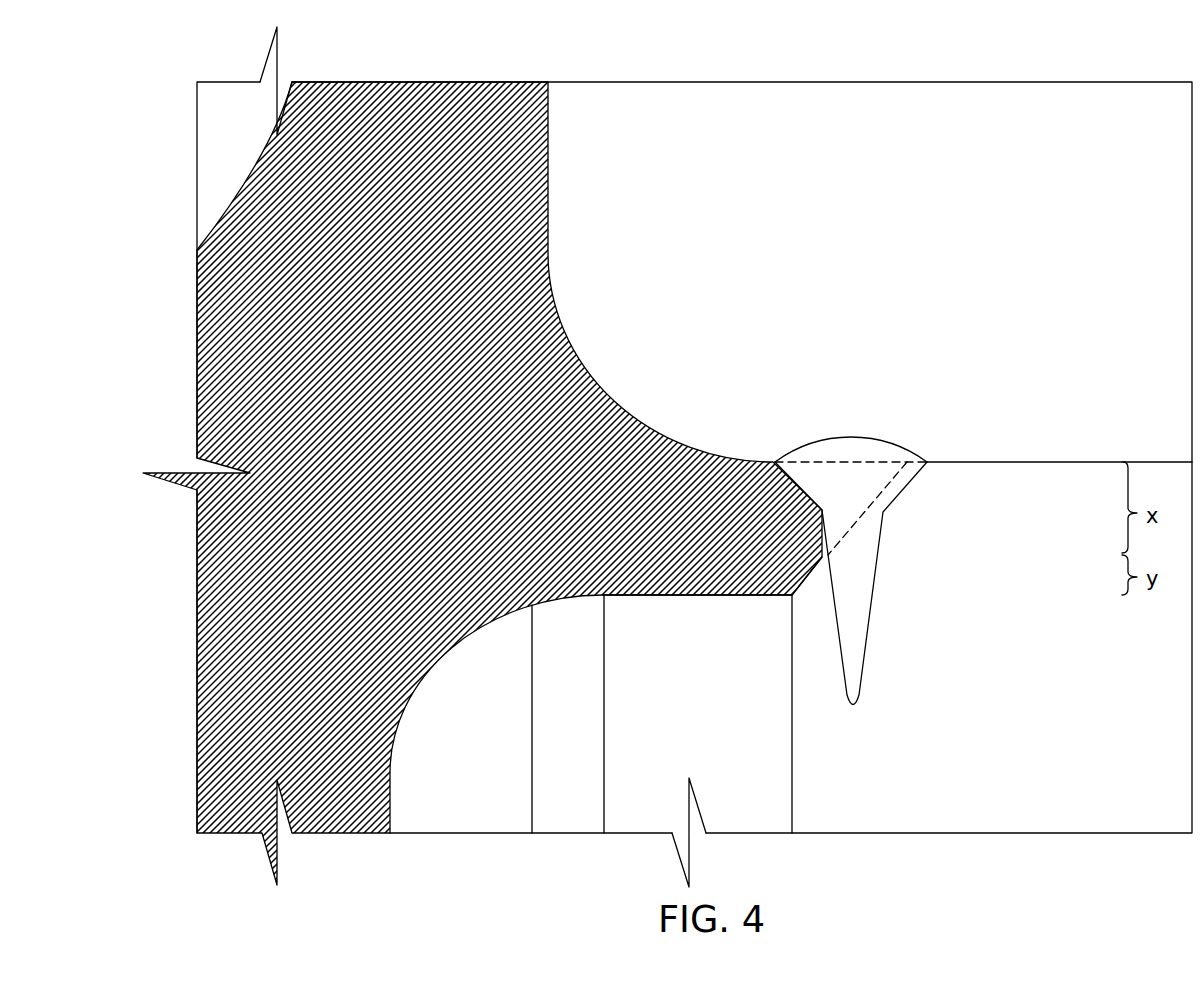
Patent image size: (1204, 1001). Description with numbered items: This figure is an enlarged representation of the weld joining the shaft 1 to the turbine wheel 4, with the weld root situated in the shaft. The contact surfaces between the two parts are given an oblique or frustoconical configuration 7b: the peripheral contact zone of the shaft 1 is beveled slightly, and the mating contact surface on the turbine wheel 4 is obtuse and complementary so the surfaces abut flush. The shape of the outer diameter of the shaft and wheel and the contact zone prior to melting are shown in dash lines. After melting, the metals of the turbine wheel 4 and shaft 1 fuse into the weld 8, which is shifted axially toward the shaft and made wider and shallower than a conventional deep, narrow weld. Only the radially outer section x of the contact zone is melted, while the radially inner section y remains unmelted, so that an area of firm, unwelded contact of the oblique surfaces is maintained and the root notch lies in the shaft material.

The shaft 1 is at (1010, 482).
The turbine wheel 4 is at (570, 342).
The weld 8 is at (853, 437).
The oblique or frustoconical configuration 7b is at (803, 588).